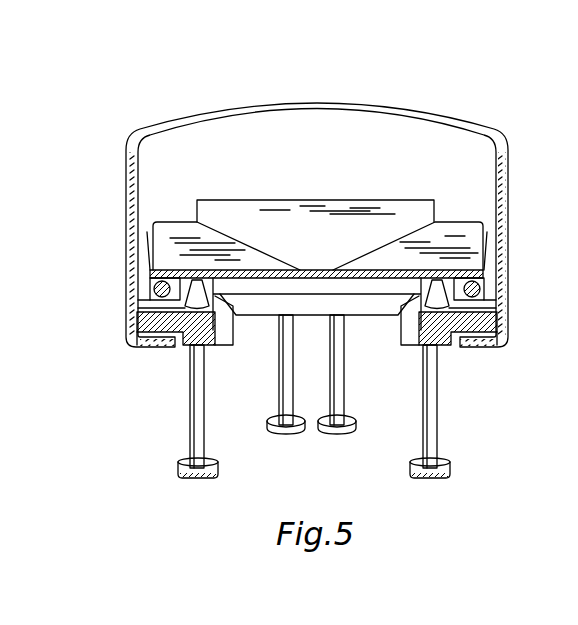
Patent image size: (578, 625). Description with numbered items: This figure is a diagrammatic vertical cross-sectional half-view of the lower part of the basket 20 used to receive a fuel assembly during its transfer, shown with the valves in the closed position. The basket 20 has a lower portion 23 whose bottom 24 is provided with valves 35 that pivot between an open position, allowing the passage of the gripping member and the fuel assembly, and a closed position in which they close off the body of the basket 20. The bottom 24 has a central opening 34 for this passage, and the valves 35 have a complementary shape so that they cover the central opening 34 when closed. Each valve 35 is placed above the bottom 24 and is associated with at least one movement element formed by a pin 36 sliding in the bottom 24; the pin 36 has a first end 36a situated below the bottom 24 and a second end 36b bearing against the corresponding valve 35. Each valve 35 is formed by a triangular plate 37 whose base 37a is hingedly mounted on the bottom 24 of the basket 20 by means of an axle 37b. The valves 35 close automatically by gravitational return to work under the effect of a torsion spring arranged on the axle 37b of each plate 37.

The basket 20 is at (452, 104).
The lower portion 23 is at (505, 187).
The bottom 24 is at (462, 344).
The central opening 34 is at (368, 346).
The valves 35 is at (312, 196).
The pin 36 is at (192, 398).
The first end 36a is at (180, 467).
The second end 36b is at (160, 340).
The triangular plate 37 is at (265, 205).
The base 37a is at (158, 272).
The axle 37b is at (180, 292).